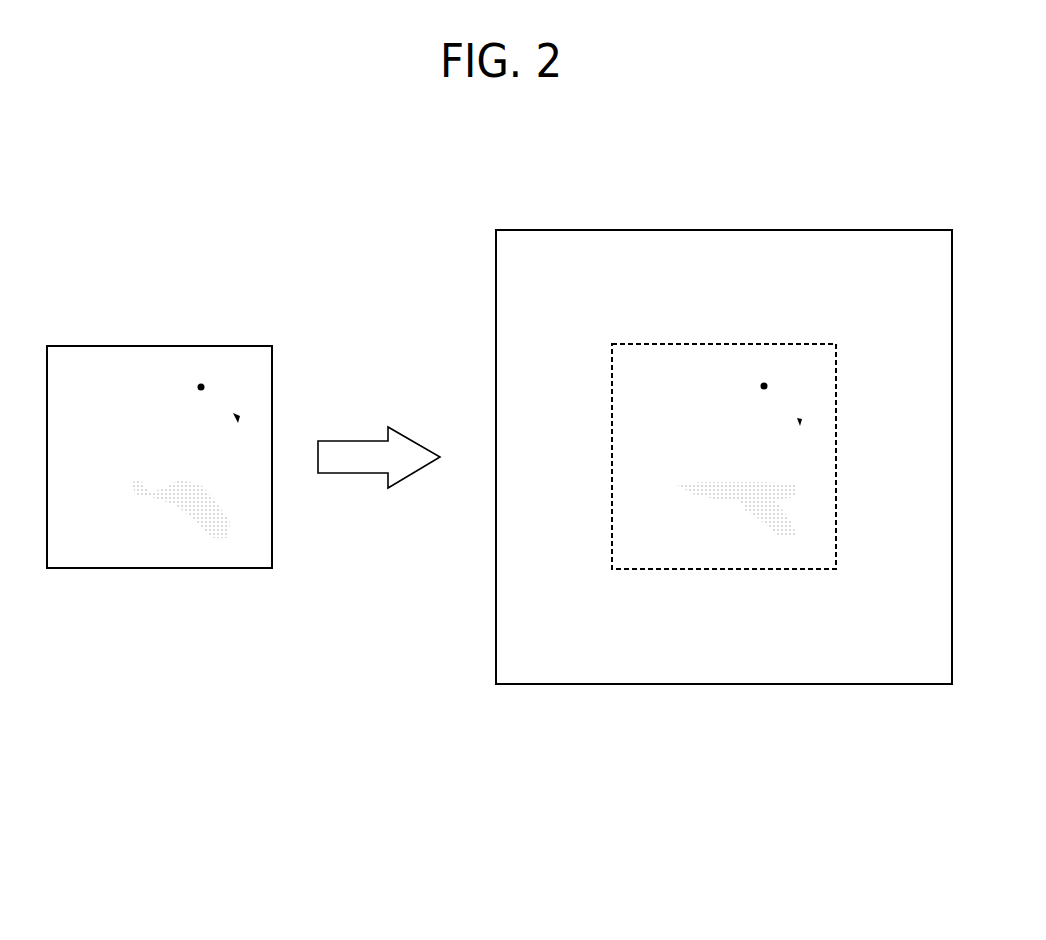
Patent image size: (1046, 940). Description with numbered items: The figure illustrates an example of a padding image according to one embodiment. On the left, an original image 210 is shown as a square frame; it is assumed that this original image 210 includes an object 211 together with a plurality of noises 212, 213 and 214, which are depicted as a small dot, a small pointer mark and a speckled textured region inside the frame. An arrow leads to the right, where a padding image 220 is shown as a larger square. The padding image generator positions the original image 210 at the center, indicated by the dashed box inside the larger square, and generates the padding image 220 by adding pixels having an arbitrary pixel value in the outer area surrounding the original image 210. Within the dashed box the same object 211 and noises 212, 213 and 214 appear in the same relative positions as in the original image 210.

The original image 210 is at (158, 568).
The padding image 220 is at (713, 684).
The object 211 is at (85, 395).
The noise 212 is at (201, 386).
The noise 213 is at (236, 417).
The noise 214 is at (218, 510).